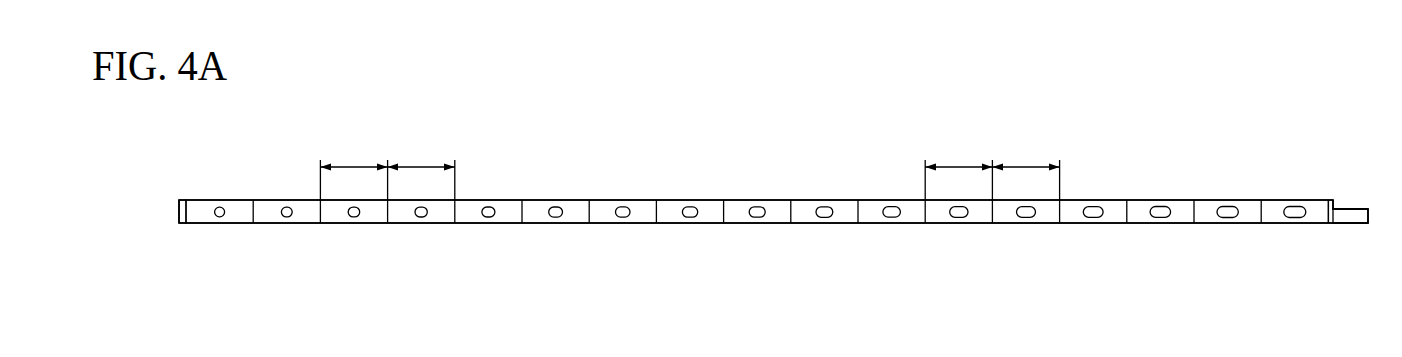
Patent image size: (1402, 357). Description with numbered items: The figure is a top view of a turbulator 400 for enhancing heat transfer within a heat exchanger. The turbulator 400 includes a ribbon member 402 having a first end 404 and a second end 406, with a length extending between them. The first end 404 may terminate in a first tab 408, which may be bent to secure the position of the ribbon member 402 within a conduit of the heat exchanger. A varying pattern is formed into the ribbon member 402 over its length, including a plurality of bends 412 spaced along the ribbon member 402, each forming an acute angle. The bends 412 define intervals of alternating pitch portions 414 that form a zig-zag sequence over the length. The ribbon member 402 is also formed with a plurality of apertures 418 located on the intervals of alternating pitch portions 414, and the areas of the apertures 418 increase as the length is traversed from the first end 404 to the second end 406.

The turbulator 400 is at (1004, 70).
The ribbon member 402 is at (188, 225).
The first end 404 is at (158, 204).
The second end 406 is at (1355, 194).
The first tab 408 is at (172, 199).
The bends 412 is at (250, 212).
The intervals of alternating pitch portions 414 is at (353, 163).
The apertures 418 is at (270, 205).